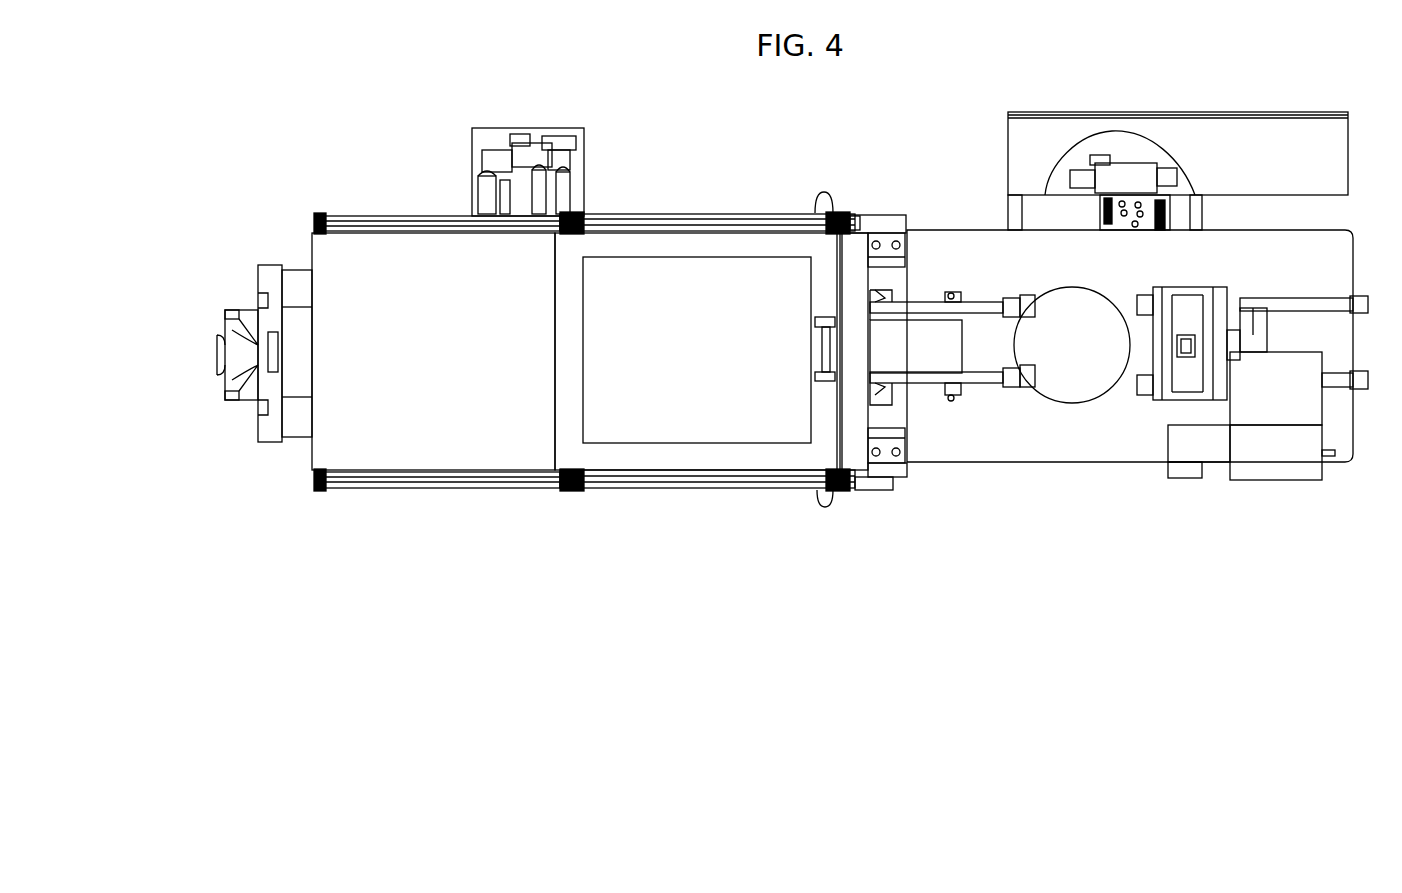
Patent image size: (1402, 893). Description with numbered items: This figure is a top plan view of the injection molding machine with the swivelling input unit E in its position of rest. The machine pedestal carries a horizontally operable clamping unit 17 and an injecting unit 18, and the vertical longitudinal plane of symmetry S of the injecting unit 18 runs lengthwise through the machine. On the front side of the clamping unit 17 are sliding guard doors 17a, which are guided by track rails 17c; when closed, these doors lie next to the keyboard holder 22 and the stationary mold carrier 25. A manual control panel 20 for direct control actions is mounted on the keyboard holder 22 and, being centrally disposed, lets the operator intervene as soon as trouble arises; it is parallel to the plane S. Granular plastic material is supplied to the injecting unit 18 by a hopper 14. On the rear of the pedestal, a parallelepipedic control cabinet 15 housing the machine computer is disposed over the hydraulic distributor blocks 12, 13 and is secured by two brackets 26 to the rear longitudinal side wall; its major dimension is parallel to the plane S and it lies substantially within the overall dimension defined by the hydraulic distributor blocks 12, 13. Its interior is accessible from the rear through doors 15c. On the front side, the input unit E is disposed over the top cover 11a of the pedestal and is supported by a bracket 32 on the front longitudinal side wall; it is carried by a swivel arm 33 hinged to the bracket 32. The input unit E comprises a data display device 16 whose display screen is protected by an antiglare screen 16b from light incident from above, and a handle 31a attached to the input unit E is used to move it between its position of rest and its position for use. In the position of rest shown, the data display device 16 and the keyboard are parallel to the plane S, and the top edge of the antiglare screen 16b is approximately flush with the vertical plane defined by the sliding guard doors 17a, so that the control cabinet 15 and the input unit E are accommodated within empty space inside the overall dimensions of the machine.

The top cover 11a is at (1030, 449).
The hydraulic distributor block 12 is at (585, 160).
The hydraulic distributor block 13 is at (1162, 166).
The hopper 14 is at (1082, 360).
The control cabinet 15 is at (1308, 177).
The doors 15c is at (1192, 113).
The data display device 16 is at (1285, 397).
The antiglare screen 16b is at (1295, 462).
The clamping unit 17 is at (505, 478).
The sliding guard doors 17a is at (703, 216).
The track rails 17c is at (390, 220).
The injecting unit 18 is at (985, 299).
The manual control panel 20 is at (877, 490).
The keyboard holder 22 is at (905, 481).
The stationary mold carrier 25 is at (857, 240).
The brackets 26 is at (1005, 215).
The handle 31a is at (1333, 458).
The bracket 32 is at (1178, 476).
The swivel arm 33 is at (1177, 440).
The input unit E is at (1258, 480).
The plane of symmetry S is at (300, 352).